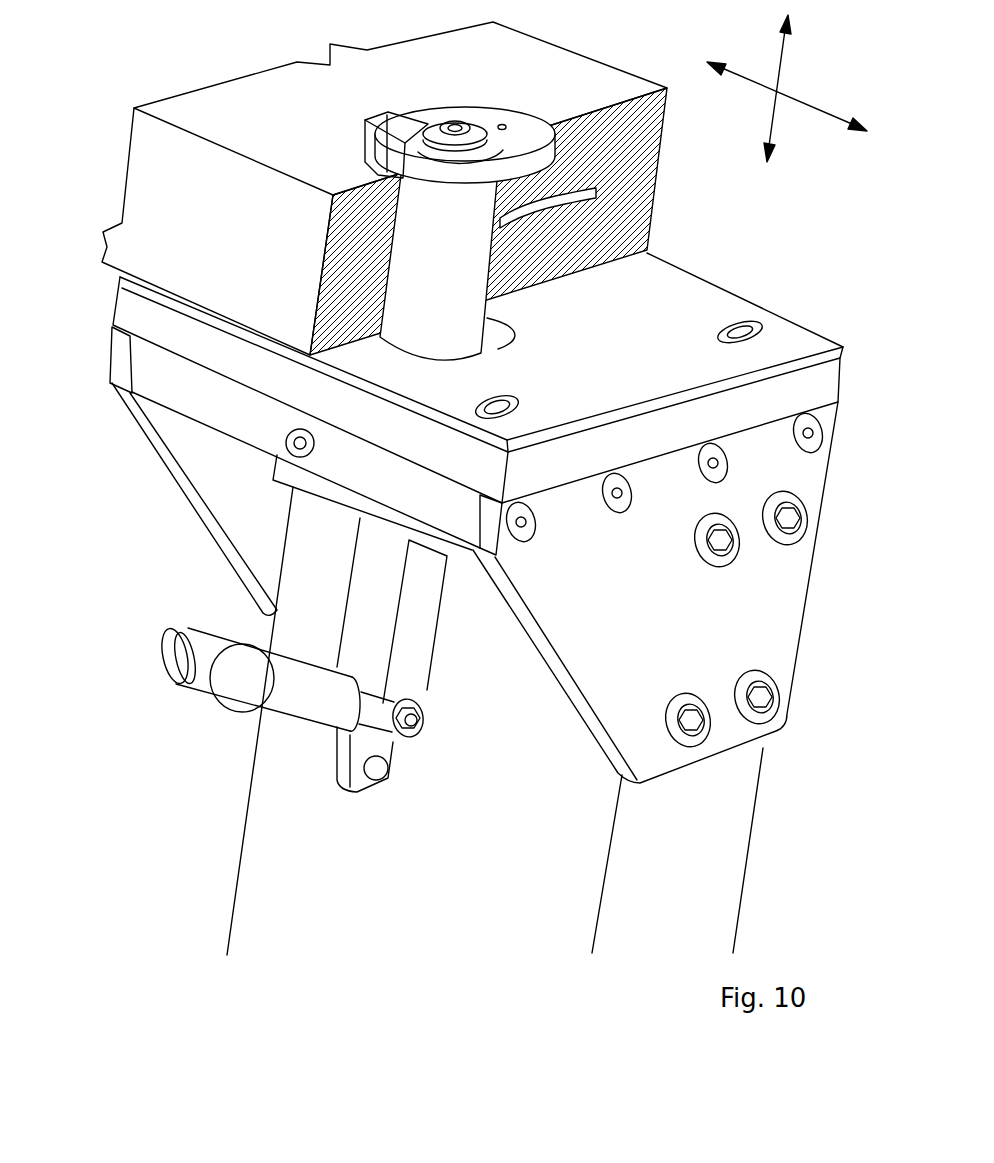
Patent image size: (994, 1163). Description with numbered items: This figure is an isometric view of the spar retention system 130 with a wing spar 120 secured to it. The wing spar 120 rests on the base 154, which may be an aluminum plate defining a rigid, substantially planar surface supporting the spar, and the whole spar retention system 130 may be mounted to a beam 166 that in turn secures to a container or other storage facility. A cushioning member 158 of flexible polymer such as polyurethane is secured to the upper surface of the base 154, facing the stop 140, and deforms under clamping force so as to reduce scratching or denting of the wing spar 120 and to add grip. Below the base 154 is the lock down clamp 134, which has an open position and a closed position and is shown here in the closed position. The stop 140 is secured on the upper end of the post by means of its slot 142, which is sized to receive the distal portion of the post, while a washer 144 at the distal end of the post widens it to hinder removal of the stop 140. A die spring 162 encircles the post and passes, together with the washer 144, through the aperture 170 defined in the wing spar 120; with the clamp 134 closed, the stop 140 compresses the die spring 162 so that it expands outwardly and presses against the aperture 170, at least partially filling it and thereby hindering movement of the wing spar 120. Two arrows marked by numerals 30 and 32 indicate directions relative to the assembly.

The first axis 30 is at (799, 103).
The second axis 32 is at (782, 62).
The wing spar 120 is at (243, 243).
The spar retention system 130 is at (688, 223).
The lock down clamp 134 is at (457, 688).
The stop 140 is at (503, 163).
The slot 142 is at (404, 148).
The washer 144 is at (432, 136).
The base 154 is at (230, 408).
The cushioning member 158 is at (619, 338).
The die spring 162 is at (462, 270).
The beam 166 is at (655, 895).
The aperture 170 is at (572, 202).